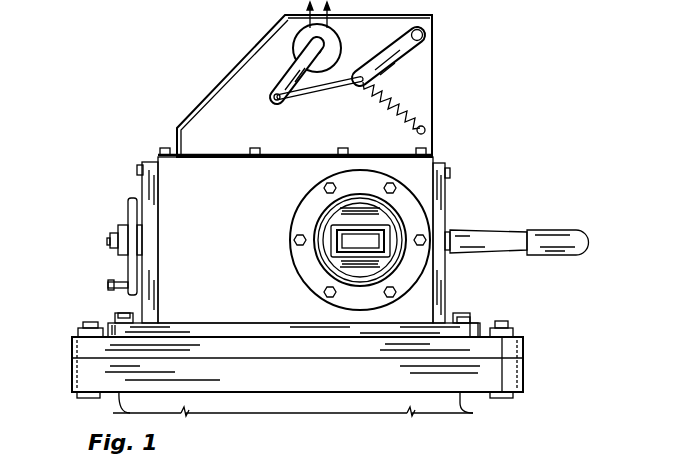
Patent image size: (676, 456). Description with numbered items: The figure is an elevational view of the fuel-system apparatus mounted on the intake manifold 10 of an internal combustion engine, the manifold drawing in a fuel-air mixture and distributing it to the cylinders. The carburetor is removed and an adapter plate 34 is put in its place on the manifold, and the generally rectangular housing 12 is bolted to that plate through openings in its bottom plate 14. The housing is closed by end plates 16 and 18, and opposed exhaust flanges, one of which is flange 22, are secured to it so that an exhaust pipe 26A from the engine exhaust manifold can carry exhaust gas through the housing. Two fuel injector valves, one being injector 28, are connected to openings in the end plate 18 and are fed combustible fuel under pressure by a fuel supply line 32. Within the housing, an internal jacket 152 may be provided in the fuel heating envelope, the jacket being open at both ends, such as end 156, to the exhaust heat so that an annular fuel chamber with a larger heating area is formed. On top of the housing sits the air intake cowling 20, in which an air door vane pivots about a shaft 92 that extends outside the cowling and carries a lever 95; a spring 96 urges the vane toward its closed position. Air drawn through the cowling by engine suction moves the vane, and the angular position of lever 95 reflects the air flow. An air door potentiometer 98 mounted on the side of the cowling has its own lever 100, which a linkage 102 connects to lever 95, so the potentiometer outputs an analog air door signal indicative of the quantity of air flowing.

The intake manifold 10 is at (523, 375).
The housing 12 is at (182, 170).
The bottom plate 14 is at (461, 313).
The end plate 16 is at (153, 184).
The end plate 18 is at (445, 185).
The air intake cowling 20 is at (257, 59).
The exhaust flange 22 is at (413, 216).
The exhaust pipe 26A is at (333, 246).
The fuel injector valve 28 is at (515, 238).
The fuel supply line 32 is at (565, 238).
The adapter plate 34 is at (510, 342).
The shaft 92 is at (433, 36).
The lever 95 is at (393, 50).
The spring 96 is at (384, 115).
The air door potentiometer 98 is at (310, 33).
The lever 100 is at (283, 73).
The linkage 102 is at (314, 90).
The internal jacket 152 is at (330, 238).
The open end 156 is at (340, 230).